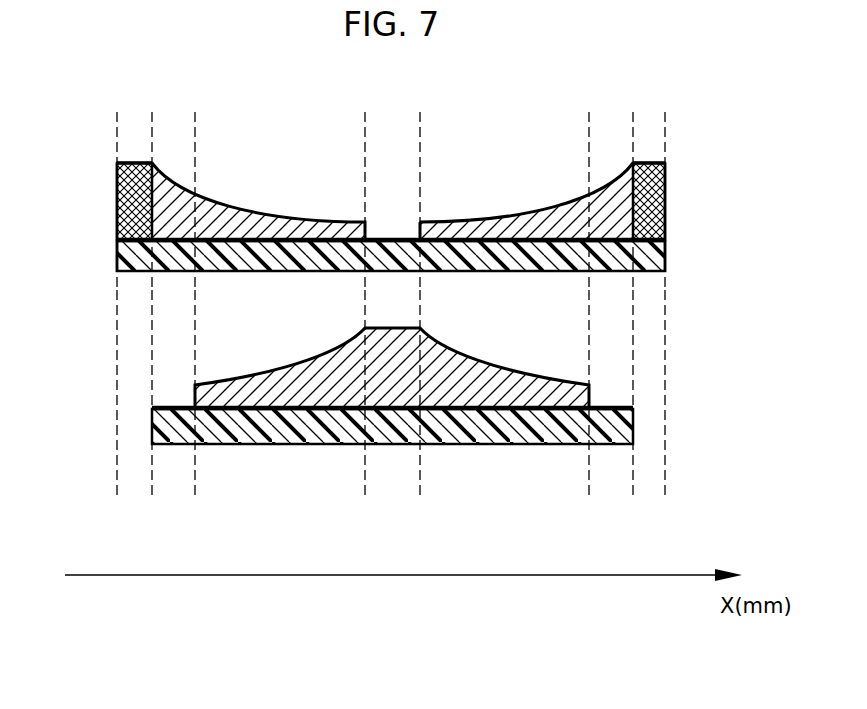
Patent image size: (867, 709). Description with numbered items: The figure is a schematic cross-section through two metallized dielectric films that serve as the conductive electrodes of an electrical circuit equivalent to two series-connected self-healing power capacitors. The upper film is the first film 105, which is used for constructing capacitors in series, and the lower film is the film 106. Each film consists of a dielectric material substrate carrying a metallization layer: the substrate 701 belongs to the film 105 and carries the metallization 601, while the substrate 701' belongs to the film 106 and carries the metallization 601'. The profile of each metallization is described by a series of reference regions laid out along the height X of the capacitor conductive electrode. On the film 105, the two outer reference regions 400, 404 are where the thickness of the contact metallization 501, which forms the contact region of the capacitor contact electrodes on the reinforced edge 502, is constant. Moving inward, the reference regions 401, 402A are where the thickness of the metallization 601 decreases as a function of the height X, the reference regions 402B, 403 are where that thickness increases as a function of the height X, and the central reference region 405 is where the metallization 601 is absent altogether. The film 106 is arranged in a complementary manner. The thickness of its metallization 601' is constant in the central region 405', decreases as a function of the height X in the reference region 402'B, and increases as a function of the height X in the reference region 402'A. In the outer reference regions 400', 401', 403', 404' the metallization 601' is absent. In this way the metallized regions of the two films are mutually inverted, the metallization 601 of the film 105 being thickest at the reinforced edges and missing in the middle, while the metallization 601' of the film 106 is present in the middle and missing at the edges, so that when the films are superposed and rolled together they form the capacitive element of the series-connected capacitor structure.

The reference region 400 is at (115, 184).
The reference region 401 is at (212, 184).
The reference region 402A is at (308, 131).
The reference region 402B is at (533, 131).
The reference region 403 is at (577, 184).
The reference region 404 is at (671, 184).
The reference region 405 is at (392, 184).
The contact region 501 is at (118, 197).
The reinforced edge 502 is at (119, 160).
The metallization layer 601 is at (392, 201).
The dielectric material substrate 701 is at (419, 221).
The first film 105 is at (99, 226).
The second film 106 is at (100, 429).
The reference region 400' is at (116, 413).
The reference region 401' is at (210, 413).
The reference region 402'A is at (273, 489).
The reference region 402'B is at (508, 489).
The reference region 403' is at (588, 413).
The reference region 404' is at (676, 413).
The reference region 405' is at (393, 413).
The metallization layer 601' is at (392, 365).
The dielectric material substrate 701' is at (438, 426).